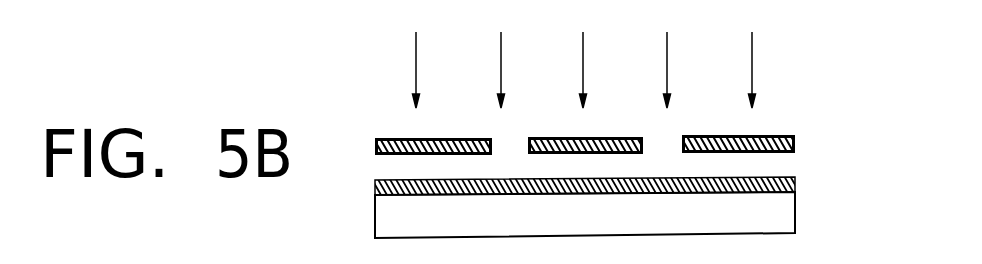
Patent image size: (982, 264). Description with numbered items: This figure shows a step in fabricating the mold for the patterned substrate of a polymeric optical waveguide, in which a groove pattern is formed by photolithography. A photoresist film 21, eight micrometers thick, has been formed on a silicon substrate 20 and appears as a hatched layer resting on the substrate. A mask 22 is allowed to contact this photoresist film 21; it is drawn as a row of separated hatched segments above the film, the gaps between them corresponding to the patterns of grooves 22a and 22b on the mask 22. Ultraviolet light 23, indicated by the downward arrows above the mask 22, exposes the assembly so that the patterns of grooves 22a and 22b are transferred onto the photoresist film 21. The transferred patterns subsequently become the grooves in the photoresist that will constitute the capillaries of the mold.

The silicon substrate 20 is at (795, 227).
The photoresist film 21 is at (795, 182).
The mask 22 is at (609, 98).
The groove pattern 22a is at (500, 130).
The groove pattern 22b is at (697, 130).
The ultraviolet light 23 is at (760, 65).